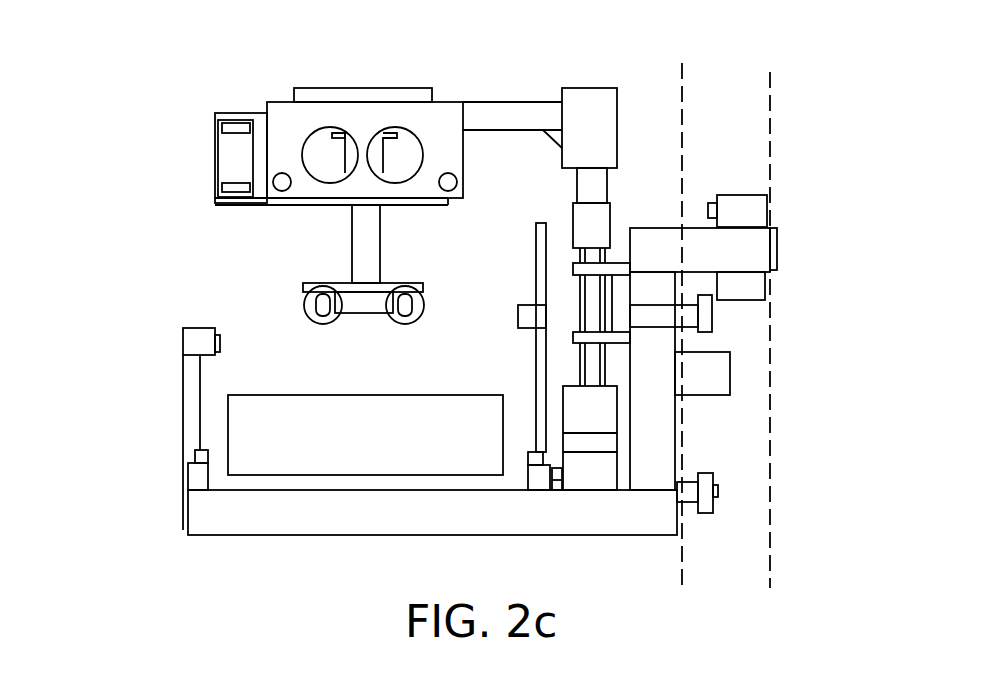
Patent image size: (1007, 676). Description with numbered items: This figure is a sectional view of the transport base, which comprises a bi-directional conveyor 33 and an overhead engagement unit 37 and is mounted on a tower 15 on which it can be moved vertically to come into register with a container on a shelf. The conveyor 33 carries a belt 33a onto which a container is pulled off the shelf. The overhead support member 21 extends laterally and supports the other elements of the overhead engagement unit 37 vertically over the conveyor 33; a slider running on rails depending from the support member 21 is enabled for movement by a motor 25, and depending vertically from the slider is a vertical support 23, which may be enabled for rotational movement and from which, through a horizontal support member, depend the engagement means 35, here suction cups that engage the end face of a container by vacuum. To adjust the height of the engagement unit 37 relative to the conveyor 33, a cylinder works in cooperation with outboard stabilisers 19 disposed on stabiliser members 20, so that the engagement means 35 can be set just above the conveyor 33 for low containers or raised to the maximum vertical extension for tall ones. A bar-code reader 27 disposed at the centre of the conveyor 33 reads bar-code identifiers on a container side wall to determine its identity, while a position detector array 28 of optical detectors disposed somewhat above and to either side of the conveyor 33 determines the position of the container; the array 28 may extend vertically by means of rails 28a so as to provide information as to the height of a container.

The tower 15 is at (750, 127).
The overhead engagement unit 37 is at (186, 105).
The motor 25 is at (371, 152).
The overhead support member 21 is at (475, 117).
The vertical support 23 is at (360, 232).
The engagement means 35 is at (390, 303).
The bar-code reader 27 is at (195, 342).
The bi-directional conveyor 33 is at (223, 427).
The belt 33a is at (285, 390).
The position detector array 28 is at (535, 318).
The outboard stabilisers 19 is at (617, 338).
The stabiliser members 20 is at (593, 367).
The rails 28a is at (542, 380).